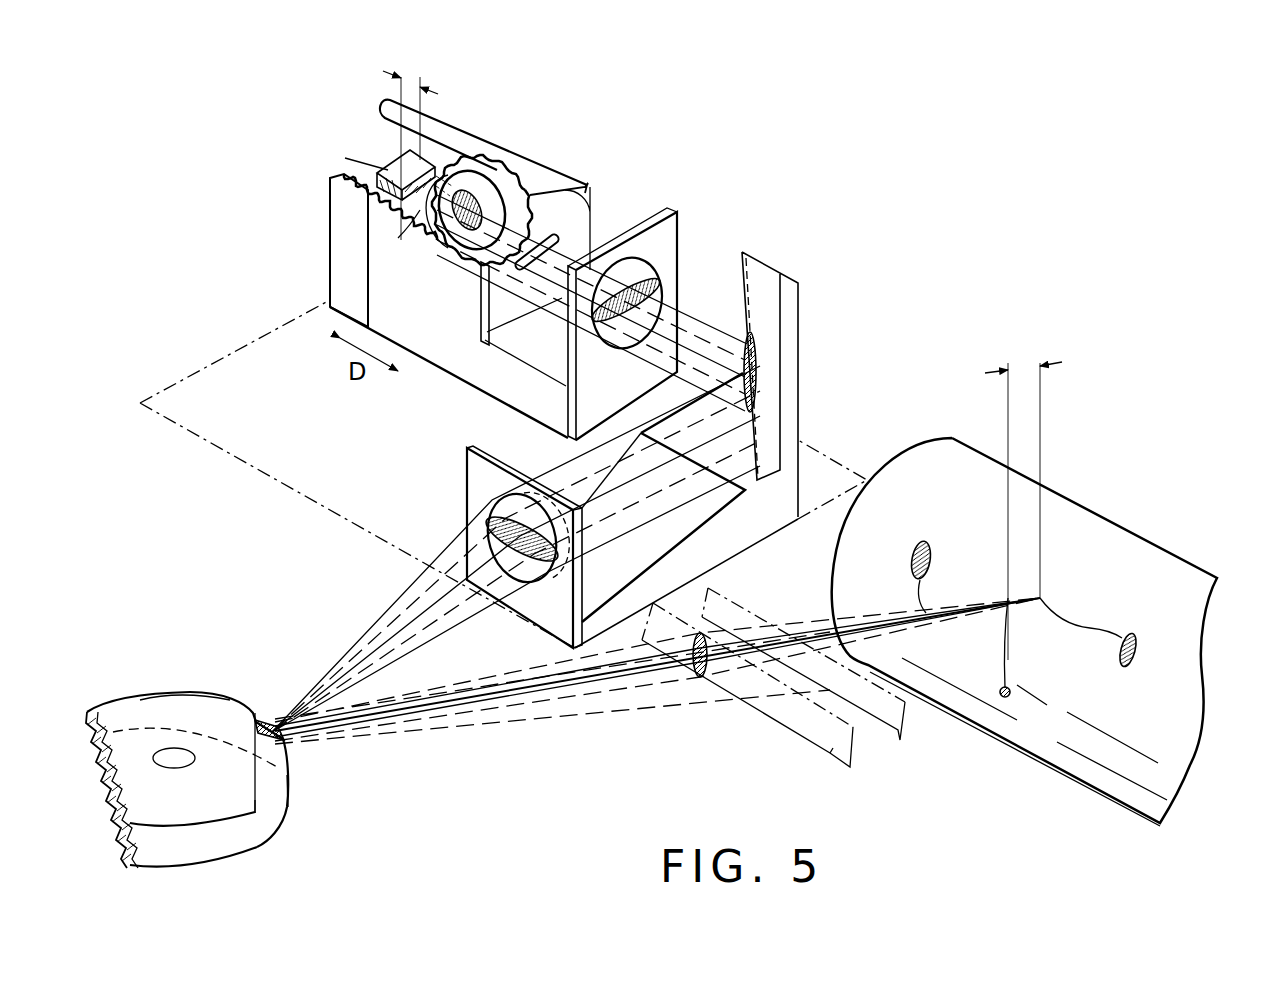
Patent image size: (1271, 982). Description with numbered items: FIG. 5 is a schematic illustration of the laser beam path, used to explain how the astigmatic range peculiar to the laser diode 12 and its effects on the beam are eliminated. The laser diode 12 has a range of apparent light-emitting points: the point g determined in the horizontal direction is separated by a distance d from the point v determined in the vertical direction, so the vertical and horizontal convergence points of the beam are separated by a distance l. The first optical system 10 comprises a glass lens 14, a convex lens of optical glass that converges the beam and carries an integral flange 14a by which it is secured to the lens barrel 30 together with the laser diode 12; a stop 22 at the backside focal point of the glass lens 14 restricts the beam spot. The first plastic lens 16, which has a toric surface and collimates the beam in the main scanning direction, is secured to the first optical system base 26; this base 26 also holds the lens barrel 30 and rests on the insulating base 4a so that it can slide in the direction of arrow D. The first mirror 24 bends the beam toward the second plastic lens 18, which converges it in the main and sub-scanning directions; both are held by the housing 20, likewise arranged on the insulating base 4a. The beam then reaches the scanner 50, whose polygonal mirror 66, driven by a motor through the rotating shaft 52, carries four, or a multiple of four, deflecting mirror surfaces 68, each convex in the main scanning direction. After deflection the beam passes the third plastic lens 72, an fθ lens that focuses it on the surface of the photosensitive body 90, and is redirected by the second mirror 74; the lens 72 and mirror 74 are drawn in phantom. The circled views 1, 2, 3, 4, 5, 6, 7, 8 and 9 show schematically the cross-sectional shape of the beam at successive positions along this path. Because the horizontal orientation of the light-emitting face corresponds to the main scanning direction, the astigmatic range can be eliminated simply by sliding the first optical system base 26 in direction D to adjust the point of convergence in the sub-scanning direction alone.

The insulating base 4a is at (306, 497).
The first optical system 10 is at (798, 298).
The laser diode 12 is at (392, 160).
The glass lens 14 is at (495, 185).
The integral flange 14a is at (440, 247).
The first plastic lens 16 is at (651, 307).
The second plastic lens 18 is at (500, 547).
The housing 20 is at (797, 490).
The stop 22 is at (592, 195).
The first mirror 24 is at (797, 368).
The first optical system base 26 is at (543, 423).
The lens barrel 30 is at (553, 165).
The scanner 50 is at (214, 760).
The rotating shaft 52 is at (180, 766).
The polygonal mirror 66 is at (196, 700).
The deflecting mirror surfaces 68 is at (225, 713).
The third plastic lens 72 is at (830, 757).
The second mirror 74 is at (892, 738).
The photosensitive body 90 is at (1024, 580).
The cross sectional shape of laser beam 1 is at (493, 188).
The cross sectional shape of laser beam 2 is at (608, 337).
The cross sectional shape of laser beam 3 is at (752, 343).
The cross sectional shape of laser beam 4 is at (524, 563).
The cross sectional shape of laser beam 5 is at (284, 745).
The cross sectional shape of laser beam 6 is at (701, 677).
The cross sectional shape of laser beam 7 is at (920, 541).
The cross sectional shape of laser beam 8 is at (1010, 695).
The cross sectional shape of laser beam 9 is at (1131, 665).